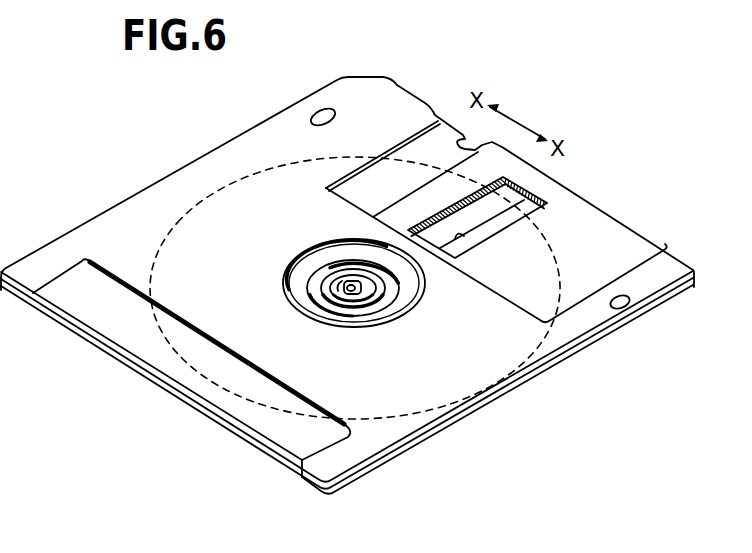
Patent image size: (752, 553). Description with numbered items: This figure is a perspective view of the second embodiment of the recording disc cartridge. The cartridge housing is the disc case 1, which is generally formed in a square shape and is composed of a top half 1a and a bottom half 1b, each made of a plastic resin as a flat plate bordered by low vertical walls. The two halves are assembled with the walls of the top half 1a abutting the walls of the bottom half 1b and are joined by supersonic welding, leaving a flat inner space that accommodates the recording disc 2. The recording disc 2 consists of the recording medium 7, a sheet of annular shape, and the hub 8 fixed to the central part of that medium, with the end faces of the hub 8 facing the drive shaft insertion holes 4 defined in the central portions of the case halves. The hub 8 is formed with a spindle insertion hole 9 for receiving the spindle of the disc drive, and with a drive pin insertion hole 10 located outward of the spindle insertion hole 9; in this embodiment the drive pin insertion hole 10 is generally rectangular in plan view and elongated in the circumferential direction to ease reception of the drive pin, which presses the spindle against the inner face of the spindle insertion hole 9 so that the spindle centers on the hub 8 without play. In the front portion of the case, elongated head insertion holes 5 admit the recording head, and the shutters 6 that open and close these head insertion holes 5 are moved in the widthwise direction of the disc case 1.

The disc case 1 is at (137, 190).
The top half 1a is at (420, 432).
The bottom half 1b is at (381, 481).
The recording disc 2 is at (207, 178).
The drive shaft insertion hole 4 is at (300, 256).
The head insertion hole 5 is at (464, 243).
The shutter 6 is at (588, 215).
The recording medium 7 is at (152, 244).
The hub 8 is at (308, 304).
The spindle insertion hole 9 is at (351, 283).
The drive pin insertion hole 10 is at (365, 296).